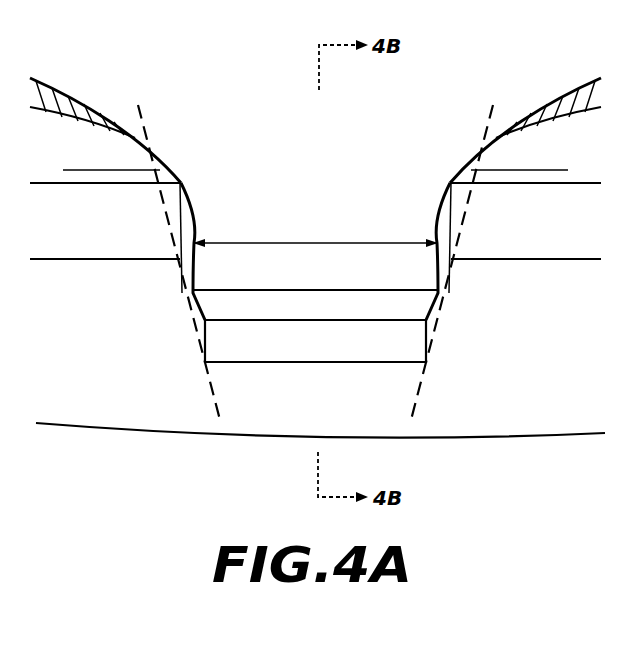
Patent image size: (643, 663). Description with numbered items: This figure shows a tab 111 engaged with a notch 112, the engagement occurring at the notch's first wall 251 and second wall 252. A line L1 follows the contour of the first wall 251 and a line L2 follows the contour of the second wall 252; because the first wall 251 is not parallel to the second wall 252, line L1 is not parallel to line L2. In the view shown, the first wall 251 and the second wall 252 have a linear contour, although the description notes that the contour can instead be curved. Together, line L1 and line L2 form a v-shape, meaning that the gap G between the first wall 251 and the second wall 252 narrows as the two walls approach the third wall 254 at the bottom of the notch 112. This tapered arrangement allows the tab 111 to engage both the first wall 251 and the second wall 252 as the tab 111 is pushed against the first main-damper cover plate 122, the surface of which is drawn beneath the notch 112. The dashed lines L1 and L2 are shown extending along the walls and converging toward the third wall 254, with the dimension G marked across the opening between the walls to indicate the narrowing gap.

The tab 111 is at (252, 142).
The notch 112 is at (298, 347).
The first main-damper cover plate 122 is at (550, 412).
The first wall 251 is at (444, 258).
The second wall 252 is at (187, 258).
The third wall 254 is at (355, 347).
The gap G is at (315, 232).
The line L1 is at (459, 253).
The line L2 is at (172, 253).